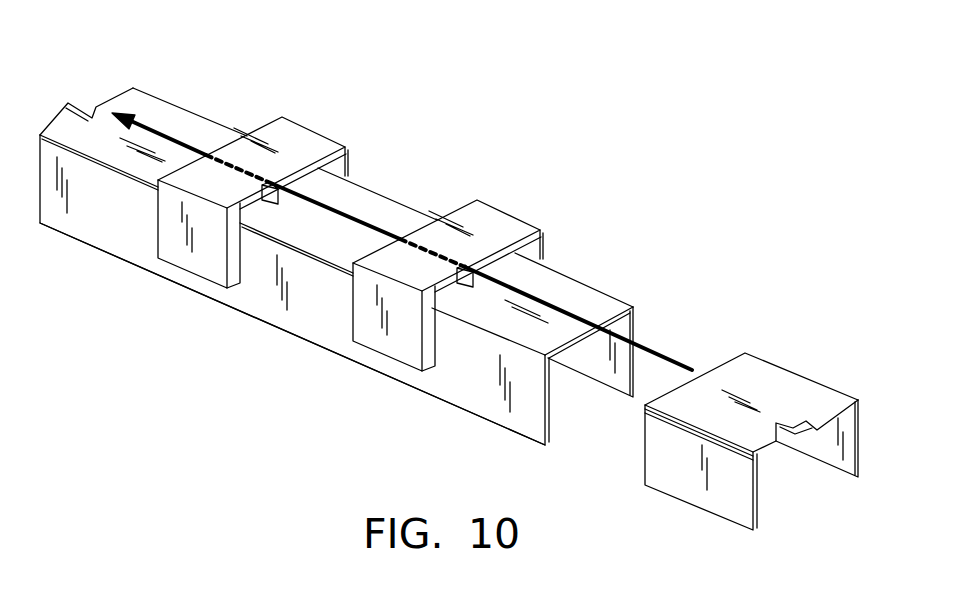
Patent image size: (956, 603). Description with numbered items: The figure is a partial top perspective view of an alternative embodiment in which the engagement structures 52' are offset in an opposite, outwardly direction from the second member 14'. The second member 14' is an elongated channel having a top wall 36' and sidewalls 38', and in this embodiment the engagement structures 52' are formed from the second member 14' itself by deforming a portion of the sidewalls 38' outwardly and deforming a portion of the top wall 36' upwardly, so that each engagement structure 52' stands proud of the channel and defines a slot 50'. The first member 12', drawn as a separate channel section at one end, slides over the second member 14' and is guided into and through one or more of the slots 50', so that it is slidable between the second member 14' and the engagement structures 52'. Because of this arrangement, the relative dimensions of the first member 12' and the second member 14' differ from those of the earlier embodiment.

The second member 14' is at (336, 232).
The top wall 36' is at (294, 210).
The sidewalls 38' is at (292, 301).
The engagement structure 52' is at (441, 203).
The slots 50' is at (467, 183).
The first member 12' is at (751, 364).